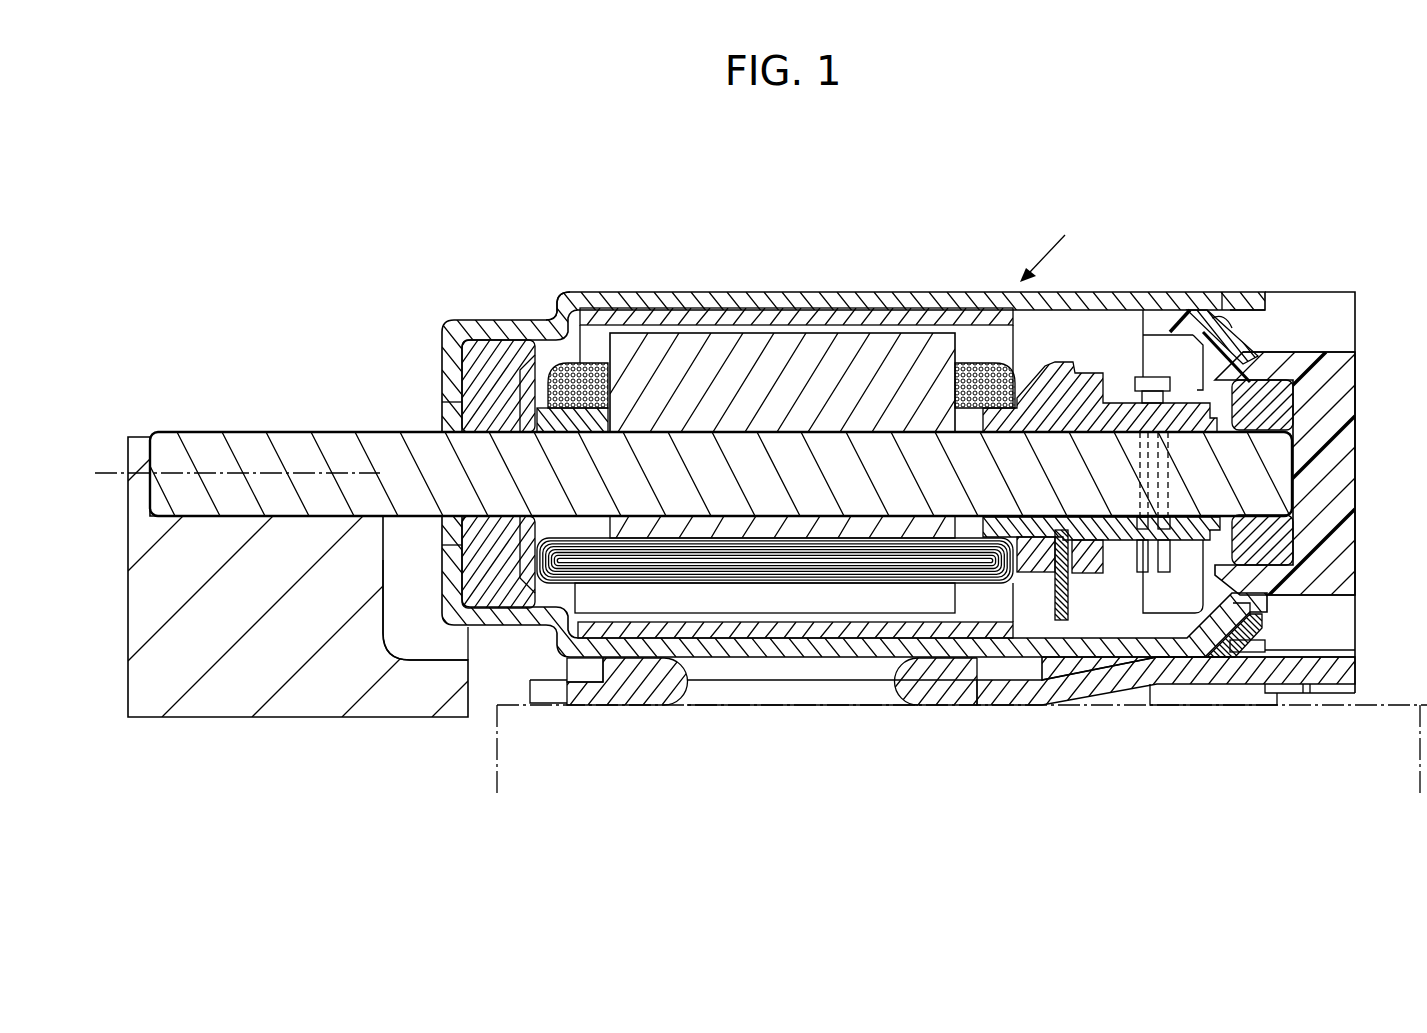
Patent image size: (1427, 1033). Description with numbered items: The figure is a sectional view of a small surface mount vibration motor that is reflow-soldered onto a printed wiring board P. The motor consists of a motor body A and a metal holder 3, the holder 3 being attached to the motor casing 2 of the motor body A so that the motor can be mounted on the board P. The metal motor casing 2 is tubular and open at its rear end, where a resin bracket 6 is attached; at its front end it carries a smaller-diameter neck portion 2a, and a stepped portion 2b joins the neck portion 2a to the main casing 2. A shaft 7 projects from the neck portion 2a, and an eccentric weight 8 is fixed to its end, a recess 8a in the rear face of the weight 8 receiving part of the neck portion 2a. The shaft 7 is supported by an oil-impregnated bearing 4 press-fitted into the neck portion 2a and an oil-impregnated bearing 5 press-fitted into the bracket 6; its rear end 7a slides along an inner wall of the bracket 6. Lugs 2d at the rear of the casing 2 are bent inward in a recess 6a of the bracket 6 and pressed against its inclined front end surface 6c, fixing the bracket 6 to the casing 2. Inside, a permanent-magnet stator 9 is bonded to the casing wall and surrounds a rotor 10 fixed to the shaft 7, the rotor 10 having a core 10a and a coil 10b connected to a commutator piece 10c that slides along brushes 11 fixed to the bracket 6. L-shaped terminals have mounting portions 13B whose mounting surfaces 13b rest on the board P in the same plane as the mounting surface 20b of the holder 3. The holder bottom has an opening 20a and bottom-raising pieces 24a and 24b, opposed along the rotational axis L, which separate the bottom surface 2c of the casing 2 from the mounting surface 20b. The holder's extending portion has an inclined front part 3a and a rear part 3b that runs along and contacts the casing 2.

The motor casing 2 is at (820, 295).
The neck portion 2a is at (497, 320).
The stepped portion of housing 2b is at (548, 300).
The bottom surface 2c is at (742, 655).
The lugs 2d is at (1238, 298).
The metal holder 3 is at (610, 712).
The front part of extending portion 3a is at (1092, 692).
The rear part of extending portion 3b is at (1193, 690).
The bearing 4 is at (485, 380).
The bearing 5 is at (1290, 555).
The bracket 6 is at (1340, 396).
The recess 6a is at (1332, 323).
The inclined front end surface 6c is at (1200, 314).
The shaft 7 is at (380, 440).
The rear end of shaft 7a is at (1318, 470).
The weight 8 is at (228, 695).
The recess 8a is at (455, 652).
The stator 9 is at (688, 312).
The rotor 10 is at (1034, 344).
The core 10a is at (755, 350).
The coil 10b is at (985, 385).
The commutator piece 10c is at (1103, 545).
The brushes 11 is at (1168, 552).
The mounting surfaces 13b is at (1170, 707).
The mounting portion 13B is at (1186, 712).
The opening 20a is at (790, 700).
The mounting surface 20b is at (955, 692).
The bottom-raising piece 24a is at (635, 690).
The bottom-raising piece 24b is at (950, 688).
The motor body A is at (1049, 243).
The rotational axis L is at (240, 472).
The printed wiring board P is at (492, 778).